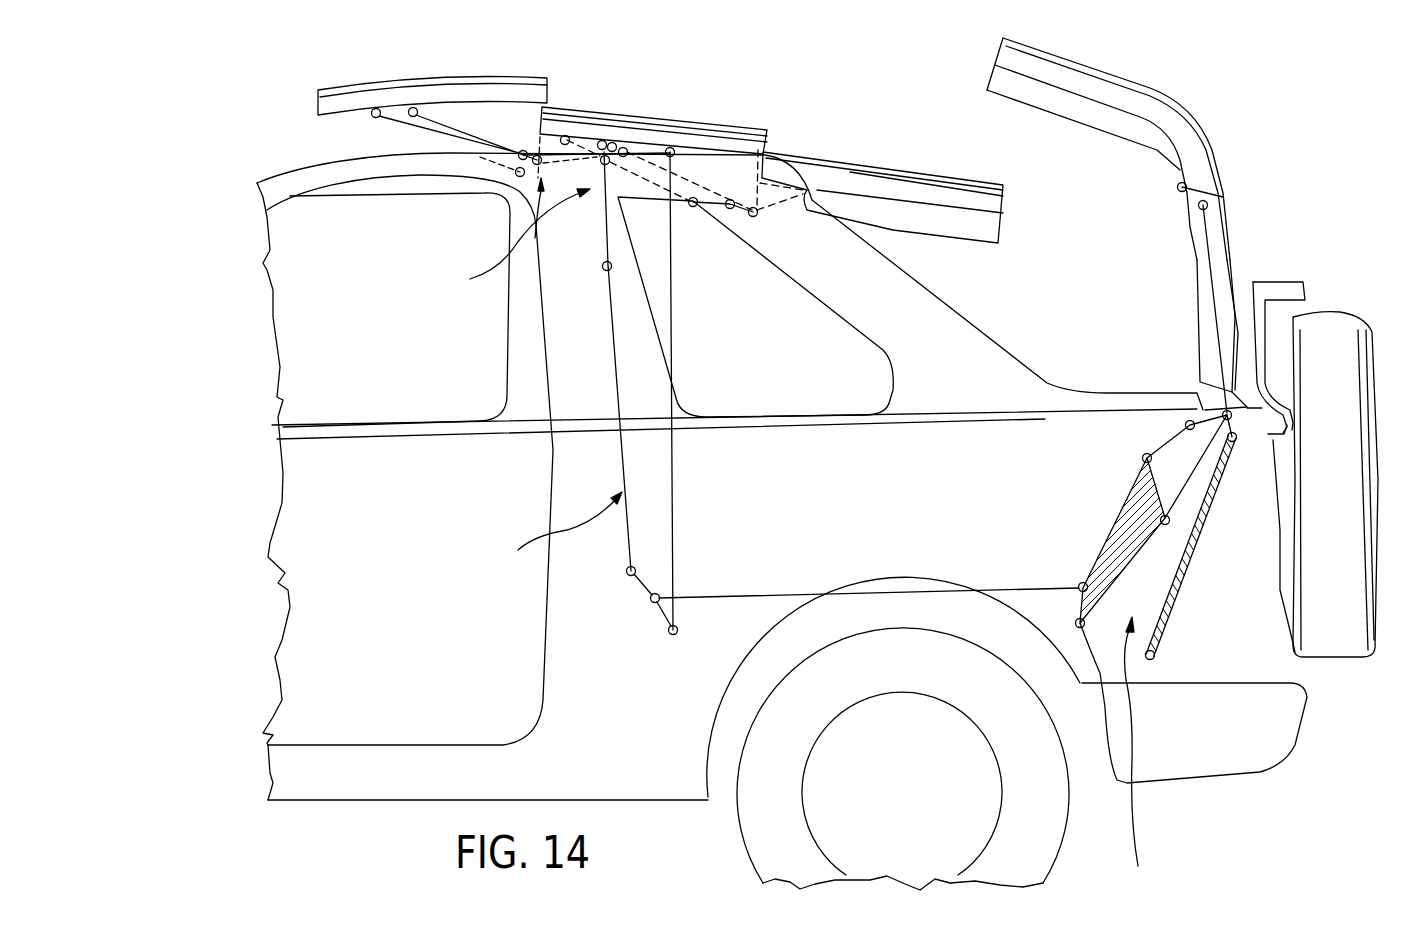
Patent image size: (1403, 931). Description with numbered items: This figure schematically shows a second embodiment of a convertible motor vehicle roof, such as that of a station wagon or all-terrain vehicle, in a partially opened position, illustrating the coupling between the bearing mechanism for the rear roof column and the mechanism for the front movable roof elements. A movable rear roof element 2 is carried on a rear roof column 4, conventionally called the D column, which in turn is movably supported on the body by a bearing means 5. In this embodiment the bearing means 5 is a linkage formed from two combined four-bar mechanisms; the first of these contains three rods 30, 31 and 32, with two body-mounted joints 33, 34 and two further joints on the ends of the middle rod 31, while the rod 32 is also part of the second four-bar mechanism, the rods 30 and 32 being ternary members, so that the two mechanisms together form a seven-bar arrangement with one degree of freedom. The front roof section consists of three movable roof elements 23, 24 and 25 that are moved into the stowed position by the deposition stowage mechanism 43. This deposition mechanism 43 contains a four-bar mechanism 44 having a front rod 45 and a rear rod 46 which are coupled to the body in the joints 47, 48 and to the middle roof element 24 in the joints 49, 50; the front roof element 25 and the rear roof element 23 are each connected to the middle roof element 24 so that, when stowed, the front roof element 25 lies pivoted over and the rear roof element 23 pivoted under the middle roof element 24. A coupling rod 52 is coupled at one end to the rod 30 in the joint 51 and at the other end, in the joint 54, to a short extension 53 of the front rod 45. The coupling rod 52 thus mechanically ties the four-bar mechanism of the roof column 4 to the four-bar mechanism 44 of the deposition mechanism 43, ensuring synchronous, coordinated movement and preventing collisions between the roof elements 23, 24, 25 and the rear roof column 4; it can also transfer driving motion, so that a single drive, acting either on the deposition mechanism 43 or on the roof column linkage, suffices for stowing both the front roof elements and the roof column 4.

The rear roof element 2 is at (1147, 98).
The rear roof column 4 is at (1220, 238).
The bearing means 5 is at (1137, 754).
The rear roof element 23 is at (877, 177).
The middle roof element 24 is at (736, 128).
The front roof element 25 is at (410, 90).
The rod 30 is at (1117, 535).
The middle rod 31 is at (1158, 458).
The rod 32 is at (1183, 575).
The body-mounted joint 33 is at (1082, 628).
The body-mounted joint 34 is at (1151, 660).
The deposition stowage mechanism 43 is at (513, 235).
The four-bar mechanism 44 is at (554, 531).
The front rod 45 is at (620, 378).
The rear rod 46 is at (673, 348).
The joint 47 is at (629, 574).
The joint 48 is at (672, 636).
The joint 49 is at (604, 146).
The joint 50 is at (670, 147).
The joint 51 is at (1080, 585).
The coupling rod 52 is at (757, 597).
The short extension 53 is at (651, 599).
The joint 54 is at (653, 606).